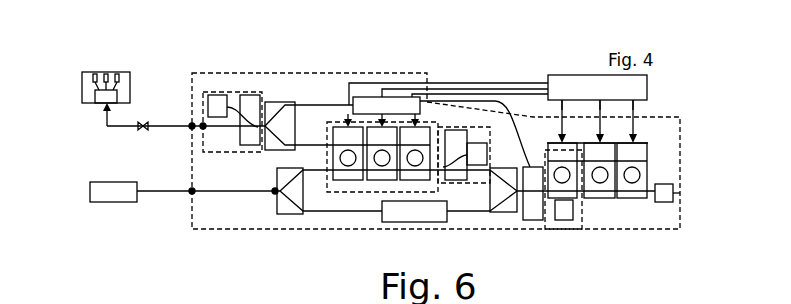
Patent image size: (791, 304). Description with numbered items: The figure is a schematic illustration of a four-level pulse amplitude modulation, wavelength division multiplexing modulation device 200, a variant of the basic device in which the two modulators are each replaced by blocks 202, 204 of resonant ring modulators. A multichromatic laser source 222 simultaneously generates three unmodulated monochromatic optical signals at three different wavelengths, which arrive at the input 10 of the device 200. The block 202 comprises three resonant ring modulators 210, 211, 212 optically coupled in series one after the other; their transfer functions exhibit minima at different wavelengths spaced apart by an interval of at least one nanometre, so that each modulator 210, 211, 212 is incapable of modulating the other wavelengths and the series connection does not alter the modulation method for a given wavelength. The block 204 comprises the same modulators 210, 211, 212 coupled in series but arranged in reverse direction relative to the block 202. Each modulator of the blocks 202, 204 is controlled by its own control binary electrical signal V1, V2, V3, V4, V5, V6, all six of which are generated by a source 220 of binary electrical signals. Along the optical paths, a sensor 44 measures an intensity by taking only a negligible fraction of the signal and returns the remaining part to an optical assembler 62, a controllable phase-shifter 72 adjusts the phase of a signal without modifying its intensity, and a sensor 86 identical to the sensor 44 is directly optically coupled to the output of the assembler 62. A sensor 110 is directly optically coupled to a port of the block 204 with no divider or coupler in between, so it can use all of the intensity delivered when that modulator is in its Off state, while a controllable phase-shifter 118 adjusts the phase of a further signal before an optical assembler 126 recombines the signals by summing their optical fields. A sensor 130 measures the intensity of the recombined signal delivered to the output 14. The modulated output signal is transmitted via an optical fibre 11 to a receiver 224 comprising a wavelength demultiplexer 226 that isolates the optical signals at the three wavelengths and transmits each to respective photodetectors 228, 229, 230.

The input 10 is at (191, 193).
The optical fibre 11 is at (143, 128).
The output 14 is at (191, 128).
The sensor 44 is at (478, 193).
The optical assembler 62 is at (531, 168).
The controllable phase-shifter 72 is at (433, 213).
The sensor 86 is at (530, 236).
The sensor 110 is at (684, 193).
The controllable phase-shifter 118 is at (367, 105).
The optical assembler 126 is at (279, 96).
The sensor 130 is at (236, 86).
The 4-PAM-WDM modulation device 200 is at (211, 66).
The block of resonant ring modulators 202 is at (325, 114).
The block of resonant ring modulators 204 is at (657, 137).
The resonant ring modulator 210 is at (350, 181).
The resonant ring modulator 211 is at (381, 181).
The resonant ring modulator 212 is at (405, 181).
The source of binary electrical signals 220 is at (597, 109).
The multichromatic laser source 222 is at (113, 192).
The receiver 224 is at (160, 44).
The wavelength demultiplexer 226 is at (100, 103).
The photodetector 228 is at (94, 74).
The photodetector 229 is at (106, 73).
The photodetector 230 is at (118, 74).
The control binary electrical signal V1 is at (433, 83).
The control binary electrical signal V2 is at (640, 108).
The control binary electrical signal V3 is at (463, 89).
The control binary electrical signal V4 is at (596, 105).
The control binary electrical signal V5 is at (493, 94).
The control binary electrical signal V6 is at (558, 105).